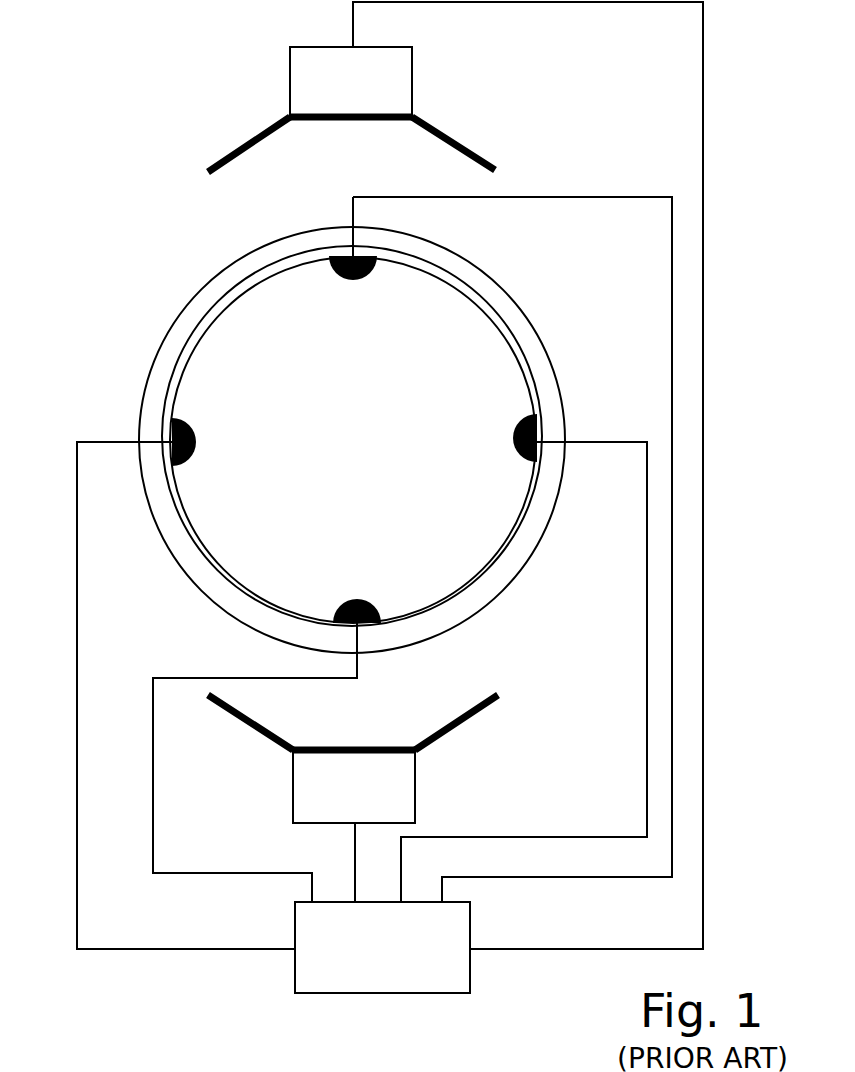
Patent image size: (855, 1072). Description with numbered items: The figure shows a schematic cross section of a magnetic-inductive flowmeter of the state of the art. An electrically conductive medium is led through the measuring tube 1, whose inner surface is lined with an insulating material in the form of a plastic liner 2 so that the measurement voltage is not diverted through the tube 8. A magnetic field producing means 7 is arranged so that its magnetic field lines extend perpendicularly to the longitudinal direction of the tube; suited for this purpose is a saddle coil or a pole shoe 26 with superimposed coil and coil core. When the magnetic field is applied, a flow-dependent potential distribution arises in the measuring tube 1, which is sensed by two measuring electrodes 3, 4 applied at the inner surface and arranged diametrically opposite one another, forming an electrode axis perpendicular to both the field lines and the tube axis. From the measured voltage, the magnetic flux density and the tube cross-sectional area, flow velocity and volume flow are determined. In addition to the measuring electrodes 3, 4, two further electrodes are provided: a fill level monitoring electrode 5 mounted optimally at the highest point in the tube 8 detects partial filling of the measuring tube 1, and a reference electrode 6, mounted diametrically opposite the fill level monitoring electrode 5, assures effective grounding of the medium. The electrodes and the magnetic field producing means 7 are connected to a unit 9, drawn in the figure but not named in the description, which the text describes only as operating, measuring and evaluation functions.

The measuring tube 1 is at (80, 147).
The plastic liner 2 is at (540, 400).
The measuring electrode 3 is at (195, 427).
The measuring electrode 4 is at (512, 448).
The fill level monitoring electrode 5 is at (368, 273).
The reference electrode 6 is at (372, 600).
The magnetic field producing means 7 is at (395, 88).
The tube 8 is at (540, 328).
The control unit 9 is at (382, 947).
The pole shoe 26 is at (443, 132).